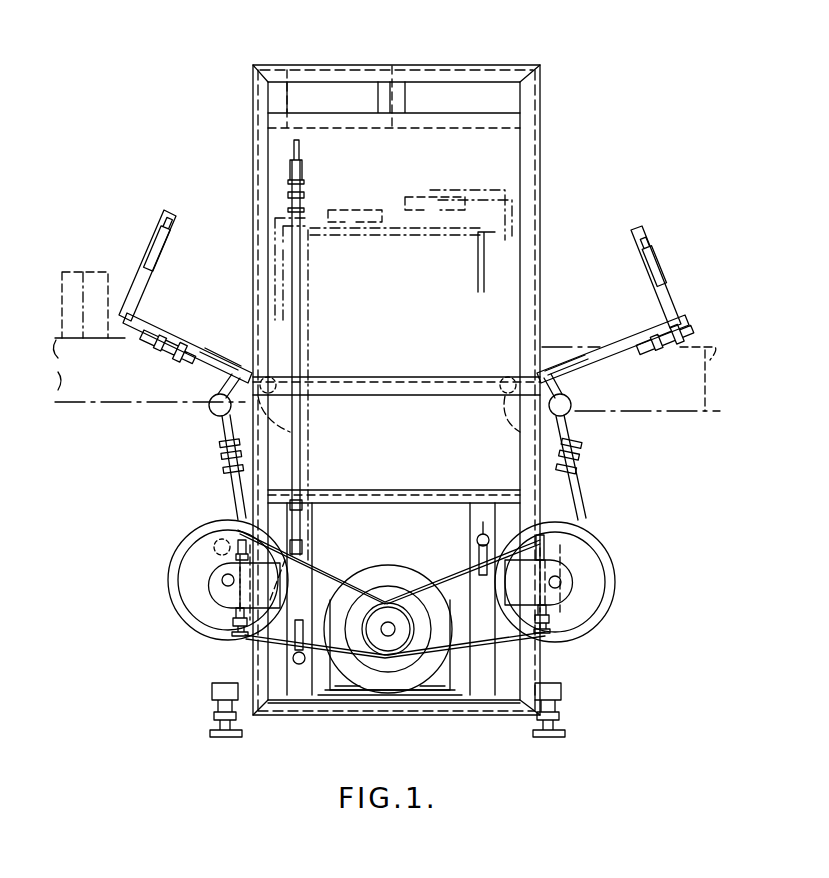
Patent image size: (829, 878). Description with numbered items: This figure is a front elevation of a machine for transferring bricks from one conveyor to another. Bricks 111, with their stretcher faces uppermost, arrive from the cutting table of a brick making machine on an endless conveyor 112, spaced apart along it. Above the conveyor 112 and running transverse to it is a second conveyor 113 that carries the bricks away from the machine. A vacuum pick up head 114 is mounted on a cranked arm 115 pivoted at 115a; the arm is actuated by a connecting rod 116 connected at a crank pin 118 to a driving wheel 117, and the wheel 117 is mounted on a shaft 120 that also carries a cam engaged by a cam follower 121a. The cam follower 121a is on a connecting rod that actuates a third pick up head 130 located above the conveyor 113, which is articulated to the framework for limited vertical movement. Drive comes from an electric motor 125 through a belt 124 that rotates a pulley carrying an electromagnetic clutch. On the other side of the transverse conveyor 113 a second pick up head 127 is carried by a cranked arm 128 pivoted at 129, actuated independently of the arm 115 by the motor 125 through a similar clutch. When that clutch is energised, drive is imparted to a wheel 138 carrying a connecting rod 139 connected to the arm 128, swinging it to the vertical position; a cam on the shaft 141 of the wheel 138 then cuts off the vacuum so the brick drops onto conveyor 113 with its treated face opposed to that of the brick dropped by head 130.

The bricks 111 is at (98, 272).
The endless conveyor 112 is at (112, 340).
The second conveyor 113 is at (482, 265).
The vacuum pick up head 114 is at (170, 220).
The cranked arm 115 is at (187, 348).
The pivot 115a is at (306, 430).
The connecting rod 116 is at (230, 482).
The driving wheel 117 is at (180, 562).
The crank pin 118 is at (238, 632).
The shaft 120 is at (220, 580).
The cam follower 121a is at (215, 540).
The belt 124 is at (313, 572).
The electric motor 125 is at (430, 698).
The second pick up head 127 is at (648, 226).
The cranked arm 128 is at (585, 364).
The pivot 129 is at (503, 380).
The third pick up head 130 is at (312, 80).
The wheel 138 is at (578, 633).
The connecting rod 139 is at (590, 512).
The shaft 141 is at (562, 580).